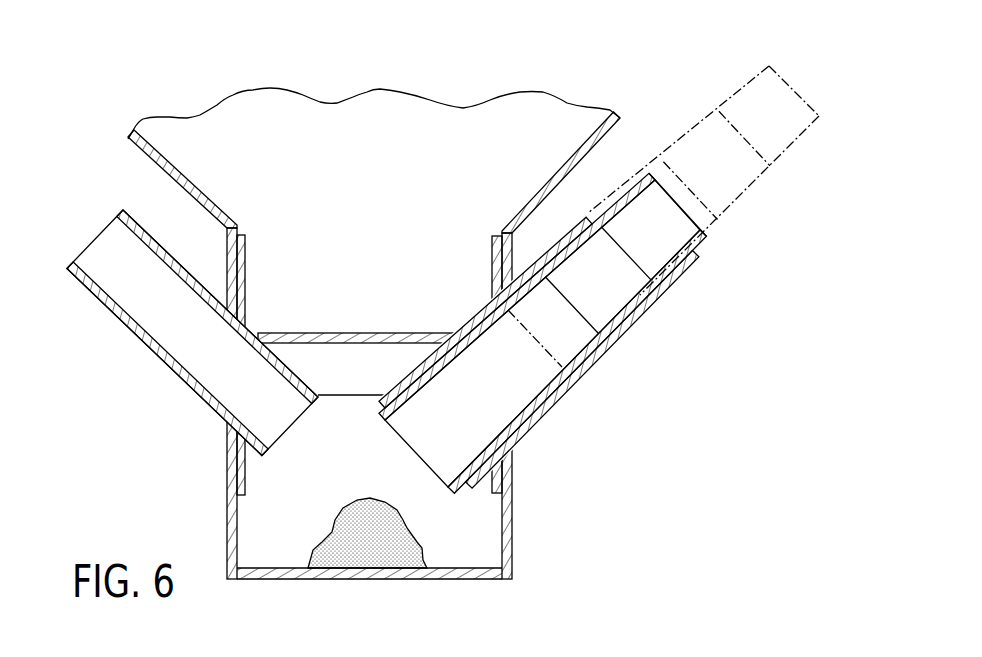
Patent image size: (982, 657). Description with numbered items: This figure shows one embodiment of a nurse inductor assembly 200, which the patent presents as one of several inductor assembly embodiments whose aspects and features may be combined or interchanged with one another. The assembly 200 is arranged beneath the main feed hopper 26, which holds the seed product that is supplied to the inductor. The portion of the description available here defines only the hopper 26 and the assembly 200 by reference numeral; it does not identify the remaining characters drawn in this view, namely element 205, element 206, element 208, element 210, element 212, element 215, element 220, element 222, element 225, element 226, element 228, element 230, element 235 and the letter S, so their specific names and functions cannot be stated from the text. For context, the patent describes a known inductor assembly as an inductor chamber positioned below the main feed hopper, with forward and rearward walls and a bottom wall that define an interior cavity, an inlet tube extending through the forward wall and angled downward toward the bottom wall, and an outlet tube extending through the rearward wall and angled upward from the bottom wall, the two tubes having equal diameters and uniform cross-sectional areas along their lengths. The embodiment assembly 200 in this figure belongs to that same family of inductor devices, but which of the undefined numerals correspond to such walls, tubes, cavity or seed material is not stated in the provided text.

The main feed hopper 26 is at (144, 149).
The inductor assembly 200 is at (601, 259).
The container 205 is at (385, 426).
The left side wall 206 is at (227, 462).
The right side wall 208 is at (513, 477).
The bottom wall 210 is at (367, 583).
The interior chamber 212 is at (412, 401).
The inlet tube 215 is at (116, 325).
The guide tube 220 is at (614, 358).
The probe 222 is at (601, 255).
The inner tube wall 225 is at (537, 392).
The probe tip section 226 is at (385, 421).
The probe end section 228 is at (682, 254).
The probe intermediate section 230 is at (653, 291).
The baffle plate 235 is at (350, 388).
The sample S is at (377, 543).